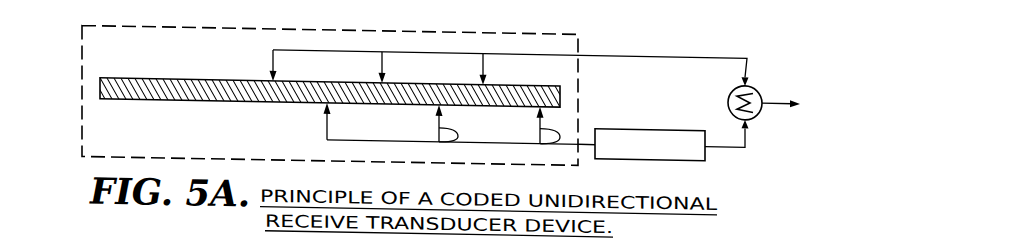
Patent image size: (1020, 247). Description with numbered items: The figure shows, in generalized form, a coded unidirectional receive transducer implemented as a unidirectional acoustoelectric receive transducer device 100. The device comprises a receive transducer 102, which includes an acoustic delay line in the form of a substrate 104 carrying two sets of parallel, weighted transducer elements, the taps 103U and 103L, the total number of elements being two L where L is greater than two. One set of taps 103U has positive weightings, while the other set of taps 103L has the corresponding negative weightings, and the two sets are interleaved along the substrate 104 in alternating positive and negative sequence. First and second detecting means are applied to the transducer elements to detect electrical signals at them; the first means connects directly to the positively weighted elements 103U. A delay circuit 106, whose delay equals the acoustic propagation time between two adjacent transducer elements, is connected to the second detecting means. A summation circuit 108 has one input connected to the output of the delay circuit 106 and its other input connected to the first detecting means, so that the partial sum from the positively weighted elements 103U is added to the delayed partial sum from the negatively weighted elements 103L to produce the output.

The unidirectional acoustoelectric receive transducer device 100 is at (64, 103).
The receive transducer 102 is at (578, 150).
The set of taps 103U is at (262, 47).
The set of taps 103L is at (557, 134).
The substrate 104 is at (161, 101).
The delay circuit 106 is at (697, 148).
The summation circuit 108 is at (757, 101).